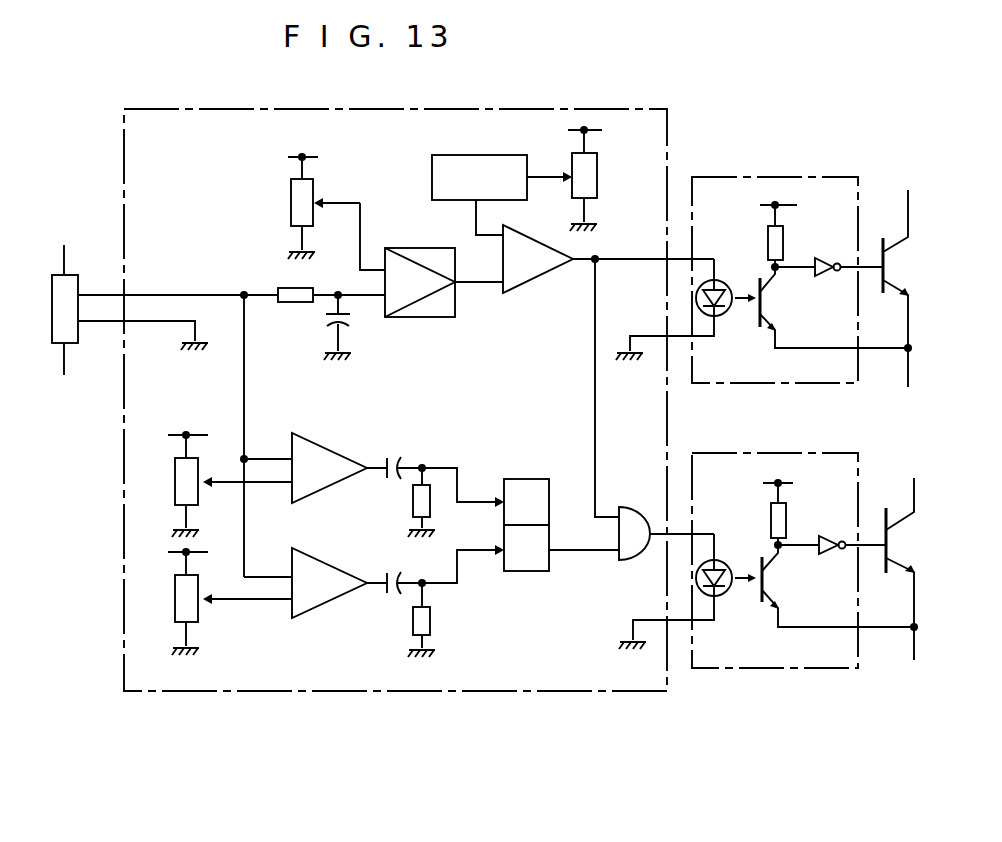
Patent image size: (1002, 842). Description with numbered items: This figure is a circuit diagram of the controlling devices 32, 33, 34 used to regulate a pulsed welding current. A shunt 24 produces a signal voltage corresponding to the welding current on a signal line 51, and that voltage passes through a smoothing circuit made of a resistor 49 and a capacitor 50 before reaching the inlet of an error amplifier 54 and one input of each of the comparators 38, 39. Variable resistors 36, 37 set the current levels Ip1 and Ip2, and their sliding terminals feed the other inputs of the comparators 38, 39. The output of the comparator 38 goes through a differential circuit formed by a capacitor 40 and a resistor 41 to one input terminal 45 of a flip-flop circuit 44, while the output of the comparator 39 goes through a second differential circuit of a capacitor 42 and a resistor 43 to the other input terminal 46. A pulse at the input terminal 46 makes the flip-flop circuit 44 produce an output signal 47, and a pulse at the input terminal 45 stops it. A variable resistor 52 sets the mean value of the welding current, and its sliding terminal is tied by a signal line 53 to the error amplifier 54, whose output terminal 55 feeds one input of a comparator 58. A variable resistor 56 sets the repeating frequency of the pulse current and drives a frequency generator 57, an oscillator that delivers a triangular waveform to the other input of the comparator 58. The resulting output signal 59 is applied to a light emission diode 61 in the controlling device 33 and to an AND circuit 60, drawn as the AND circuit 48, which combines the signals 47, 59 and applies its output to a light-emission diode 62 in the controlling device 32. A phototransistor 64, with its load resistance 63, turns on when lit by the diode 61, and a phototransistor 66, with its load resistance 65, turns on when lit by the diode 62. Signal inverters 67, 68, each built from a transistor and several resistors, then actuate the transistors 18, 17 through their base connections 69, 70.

The transistor 17 is at (904, 543).
The transistor 18 is at (900, 264).
The shunt 24 is at (80, 343).
The controlling device 32 is at (775, 540).
The controlling device 33 is at (843, 177).
The controlling device 34 is at (667, 109).
The variable resistor 36 is at (174, 486).
The variable resistor 37 is at (174, 596).
The comparator 38 is at (340, 443).
The comparator 39 is at (338, 561).
The capacitor 40 is at (394, 455).
The resistor 41 is at (412, 503).
The capacitor 42 is at (395, 572).
The resistor 43 is at (432, 620).
The flip-flop circuit 44 is at (525, 571).
The input terminal 45 is at (472, 500).
The input terminal 46 is at (477, 550).
The output signal 47 is at (581, 550).
The AND circuit 48 is at (623, 560).
The resistor 49 is at (289, 303).
The capacitor 50 is at (326, 324).
The signal line 51 is at (183, 295).
The variable resistor 52 is at (290, 198).
The signal line 53 is at (362, 217).
The error amplifier 54 is at (425, 318).
The output terminal 55 is at (484, 284).
The variable resistor 56 is at (600, 180).
The frequency generator 57 is at (473, 155).
The comparator 58 is at (540, 279).
The output signal 59 is at (632, 259).
The AND circuit 60 is at (656, 516).
The light emission diode 61 is at (724, 283).
The light-emission diode 62 is at (724, 560).
The load resistance 63 is at (786, 240).
The phototransistor 64 is at (772, 306).
The load resistance 65 is at (787, 521).
The phototransistor 66 is at (772, 588).
The signal inverter 67 is at (826, 258).
The signal inverter 68 is at (830, 554).
The base line 69 is at (870, 268).
The base line 70 is at (874, 546).